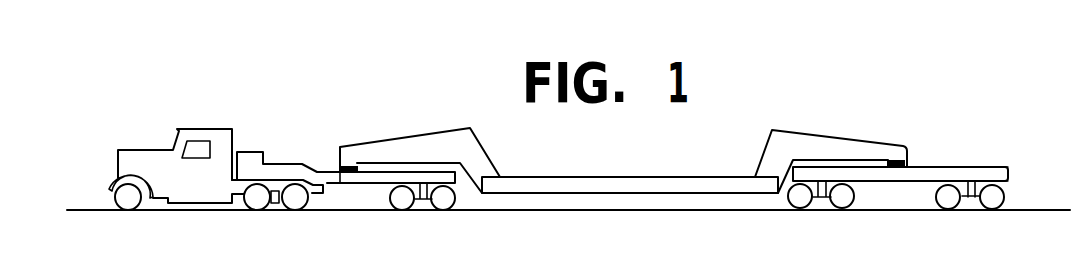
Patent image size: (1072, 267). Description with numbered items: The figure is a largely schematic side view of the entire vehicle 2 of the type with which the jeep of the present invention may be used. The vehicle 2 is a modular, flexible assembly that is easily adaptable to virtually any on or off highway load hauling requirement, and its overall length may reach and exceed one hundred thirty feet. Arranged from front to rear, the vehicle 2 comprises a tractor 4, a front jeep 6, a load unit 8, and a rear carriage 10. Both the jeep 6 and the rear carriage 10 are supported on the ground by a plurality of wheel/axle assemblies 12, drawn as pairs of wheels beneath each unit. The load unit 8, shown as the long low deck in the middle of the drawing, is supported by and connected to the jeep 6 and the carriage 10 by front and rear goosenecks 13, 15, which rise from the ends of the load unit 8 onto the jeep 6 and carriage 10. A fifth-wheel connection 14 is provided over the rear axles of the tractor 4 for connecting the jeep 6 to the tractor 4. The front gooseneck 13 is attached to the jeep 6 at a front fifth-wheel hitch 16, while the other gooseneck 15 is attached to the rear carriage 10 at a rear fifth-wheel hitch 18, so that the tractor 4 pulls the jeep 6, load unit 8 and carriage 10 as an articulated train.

The vehicle 2 is at (685, 156).
The tractor 4 is at (163, 150).
The front jeep 6 is at (282, 165).
The load unit 8 is at (735, 193).
The rear carriage 10 is at (973, 167).
The wheel/axle assemblies 12 is at (402, 199).
The front gooseneck 13 is at (418, 142).
The fifth-wheel connection 14 is at (275, 196).
The rear gooseneck 15 is at (822, 143).
The front fifth-wheel hitch 16 is at (343, 173).
The rear fifth-wheel hitch 18 is at (903, 185).